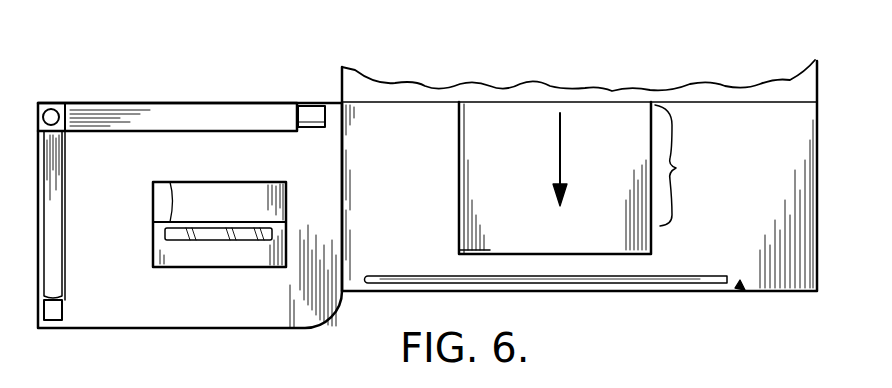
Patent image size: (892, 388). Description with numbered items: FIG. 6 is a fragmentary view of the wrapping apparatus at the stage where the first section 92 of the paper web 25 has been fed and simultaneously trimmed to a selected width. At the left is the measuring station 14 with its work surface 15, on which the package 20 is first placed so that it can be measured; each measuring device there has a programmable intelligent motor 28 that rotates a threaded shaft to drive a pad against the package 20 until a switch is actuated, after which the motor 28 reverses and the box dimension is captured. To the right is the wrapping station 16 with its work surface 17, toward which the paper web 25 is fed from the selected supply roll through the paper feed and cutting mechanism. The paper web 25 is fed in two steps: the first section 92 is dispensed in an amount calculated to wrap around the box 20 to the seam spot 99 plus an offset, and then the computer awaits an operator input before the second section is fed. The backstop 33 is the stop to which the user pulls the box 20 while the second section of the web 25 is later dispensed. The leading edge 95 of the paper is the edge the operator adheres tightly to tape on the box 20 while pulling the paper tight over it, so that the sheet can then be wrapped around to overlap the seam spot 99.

The measuring station 14 is at (180, 90).
The work surface 15 is at (155, 312).
The wrapping station 16 is at (735, 256).
The work surface 17 is at (742, 245).
The package 20 is at (250, 200).
The paper web 25 is at (530, 157).
The programmable intelligent motor 28 is at (312, 115).
The backstop 33 is at (684, 286).
The first section 92 is at (689, 165).
The leading edge 95 is at (488, 254).
The seam spot 99 is at (176, 184).